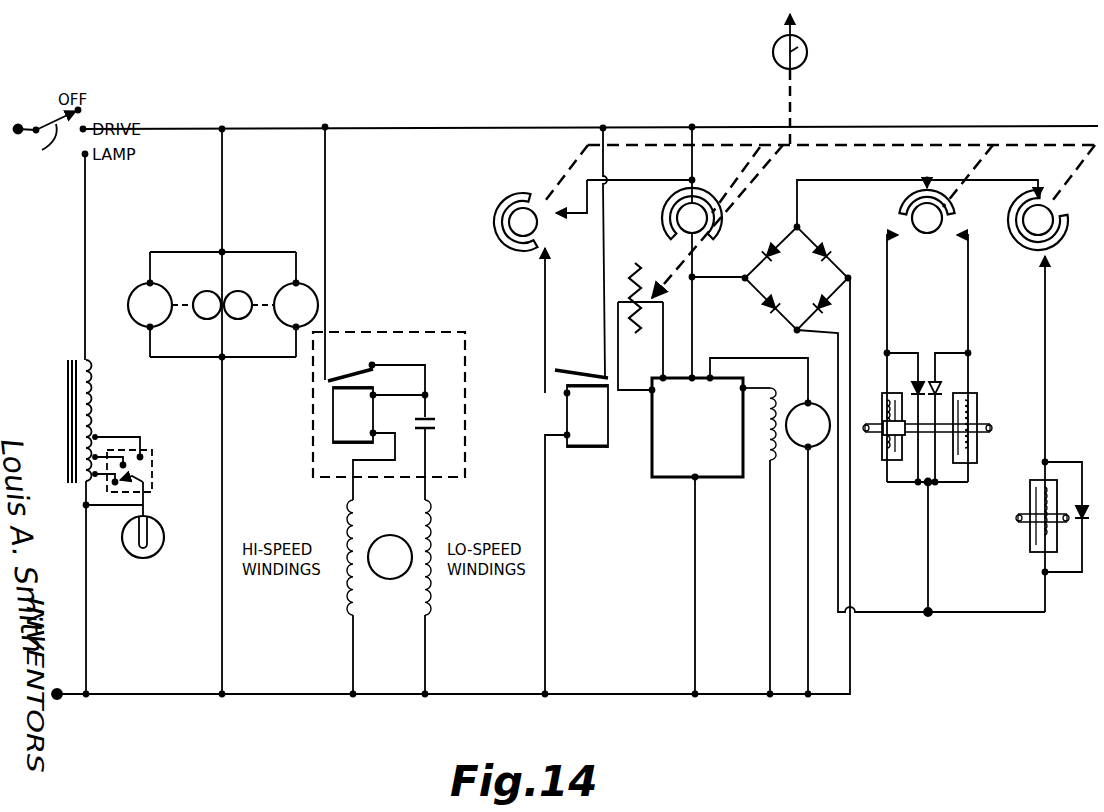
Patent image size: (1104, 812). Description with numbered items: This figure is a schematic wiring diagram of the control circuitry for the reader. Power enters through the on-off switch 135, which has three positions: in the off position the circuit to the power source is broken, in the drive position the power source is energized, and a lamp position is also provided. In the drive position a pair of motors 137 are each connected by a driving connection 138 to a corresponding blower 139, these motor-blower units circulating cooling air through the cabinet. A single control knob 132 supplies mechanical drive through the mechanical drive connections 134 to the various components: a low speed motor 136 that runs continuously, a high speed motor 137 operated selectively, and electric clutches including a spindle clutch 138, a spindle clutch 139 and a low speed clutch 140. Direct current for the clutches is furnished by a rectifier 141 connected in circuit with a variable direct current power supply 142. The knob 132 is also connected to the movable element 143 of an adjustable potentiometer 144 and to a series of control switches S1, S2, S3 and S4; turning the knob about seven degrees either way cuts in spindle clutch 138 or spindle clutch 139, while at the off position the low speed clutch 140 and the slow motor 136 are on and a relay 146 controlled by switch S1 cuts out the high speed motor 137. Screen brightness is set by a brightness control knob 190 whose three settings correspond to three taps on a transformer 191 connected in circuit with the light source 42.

The light source 42 is at (143, 558).
The control knob 132 is at (800, 49).
The mechanical drive connections 134 is at (905, 148).
The on-off switch 135 is at (48, 146).
The low speed motor 136 is at (803, 450).
The motor 137 is at (147, 284).
The driving connection / spindle clutch 138 is at (187, 281).
The blower / spindle clutch 139 is at (234, 294).
The low speed clutch 140 is at (1033, 552).
The rectifier 141 is at (797, 281).
The power supply 142 is at (672, 468).
The movable element 143 is at (655, 292).
The adjustable potentiometer 144 is at (628, 270).
The relay 146 is at (592, 435).
The brightness control knob 190 is at (140, 473).
The transformer 191 is at (96, 397).
The control switch S1 is at (528, 236).
The control switch S2 is at (694, 216).
The control switch S3 is at (927, 233).
The control switch S4 is at (1035, 225).